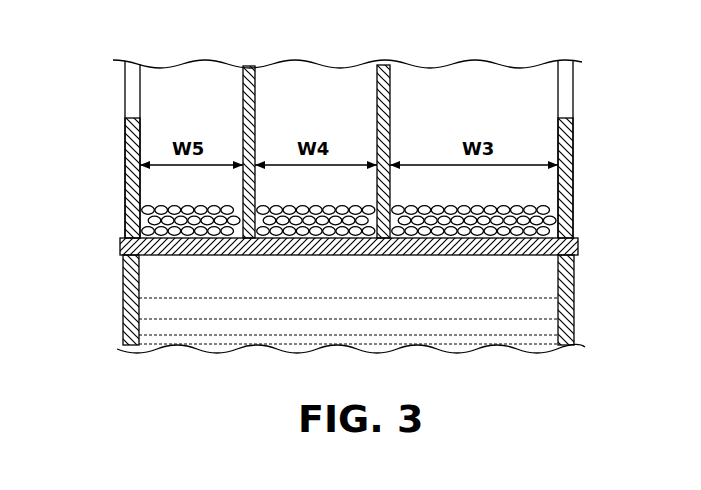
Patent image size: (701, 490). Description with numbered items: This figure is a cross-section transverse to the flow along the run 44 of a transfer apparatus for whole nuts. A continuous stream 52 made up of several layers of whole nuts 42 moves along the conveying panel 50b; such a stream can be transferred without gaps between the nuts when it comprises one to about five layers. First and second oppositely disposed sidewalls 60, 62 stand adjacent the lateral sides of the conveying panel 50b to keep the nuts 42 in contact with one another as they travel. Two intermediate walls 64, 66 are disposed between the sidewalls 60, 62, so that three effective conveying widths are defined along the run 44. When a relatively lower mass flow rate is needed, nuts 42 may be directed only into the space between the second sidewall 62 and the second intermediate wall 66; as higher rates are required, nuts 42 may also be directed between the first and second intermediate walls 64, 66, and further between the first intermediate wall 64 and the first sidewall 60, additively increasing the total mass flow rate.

The run 44 is at (98, 73).
The whole nuts 42 is at (248, 204).
The conveying panel 50b is at (530, 256).
The continuous stream 52 is at (545, 203).
The first sidewall 60 is at (125, 190).
The second sidewall 62 is at (573, 137).
The first intermediate wall 64 is at (254, 88).
The second intermediate wall 66 is at (388, 86).